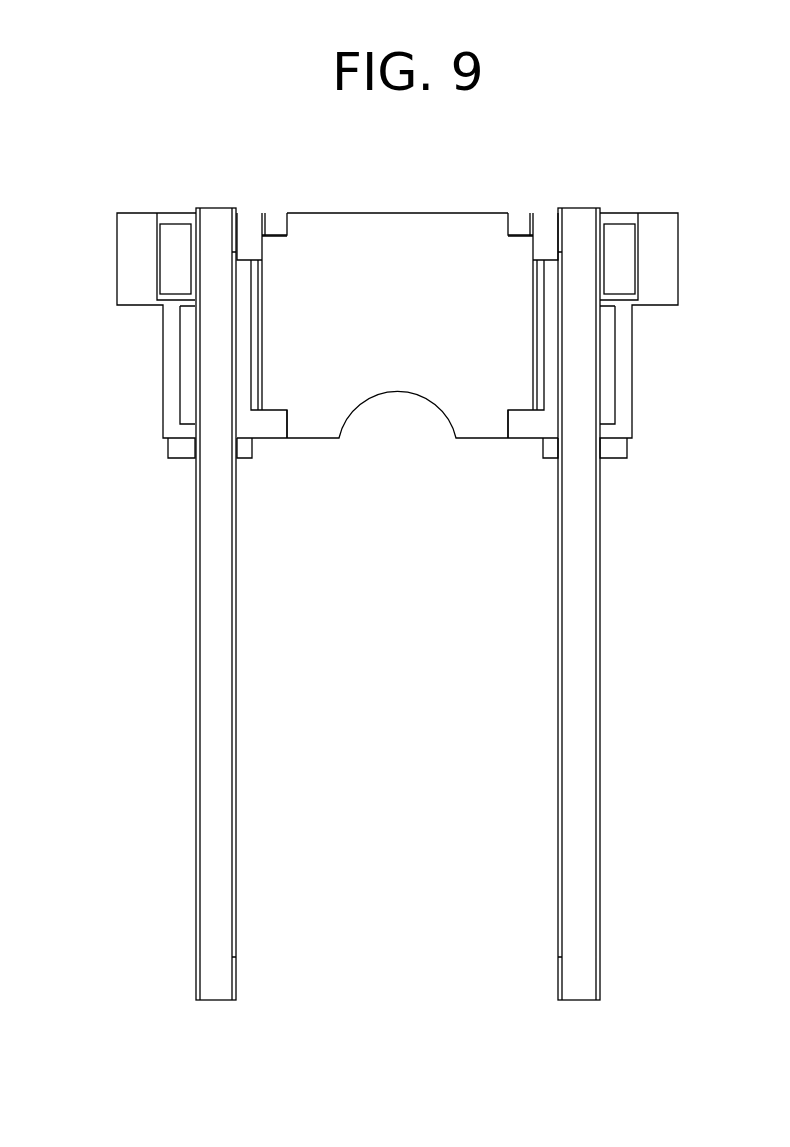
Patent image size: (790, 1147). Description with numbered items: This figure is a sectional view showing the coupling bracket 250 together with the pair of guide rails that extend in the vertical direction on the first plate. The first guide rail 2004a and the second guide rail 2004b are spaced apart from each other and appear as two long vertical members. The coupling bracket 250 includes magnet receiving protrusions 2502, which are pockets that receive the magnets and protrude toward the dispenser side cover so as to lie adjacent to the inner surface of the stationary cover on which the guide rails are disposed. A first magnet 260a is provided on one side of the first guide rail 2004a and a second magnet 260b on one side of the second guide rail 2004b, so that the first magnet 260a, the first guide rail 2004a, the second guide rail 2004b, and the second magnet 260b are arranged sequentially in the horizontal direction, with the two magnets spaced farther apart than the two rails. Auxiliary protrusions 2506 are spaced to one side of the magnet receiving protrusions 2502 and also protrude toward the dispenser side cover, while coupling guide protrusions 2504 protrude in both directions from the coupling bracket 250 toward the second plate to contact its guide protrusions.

The coupling bracket 250 is at (395, 230).
The magnet receiving protrusion 2502 is at (167, 218).
The coupling guide protrusion 2504 is at (132, 244).
The auxiliary protrusion 2506 is at (250, 223).
The first magnet 260a is at (176, 232).
The second magnet 260b is at (618, 232).
The first guide rail 2004a is at (207, 655).
The second guide rail 2004b is at (588, 657).